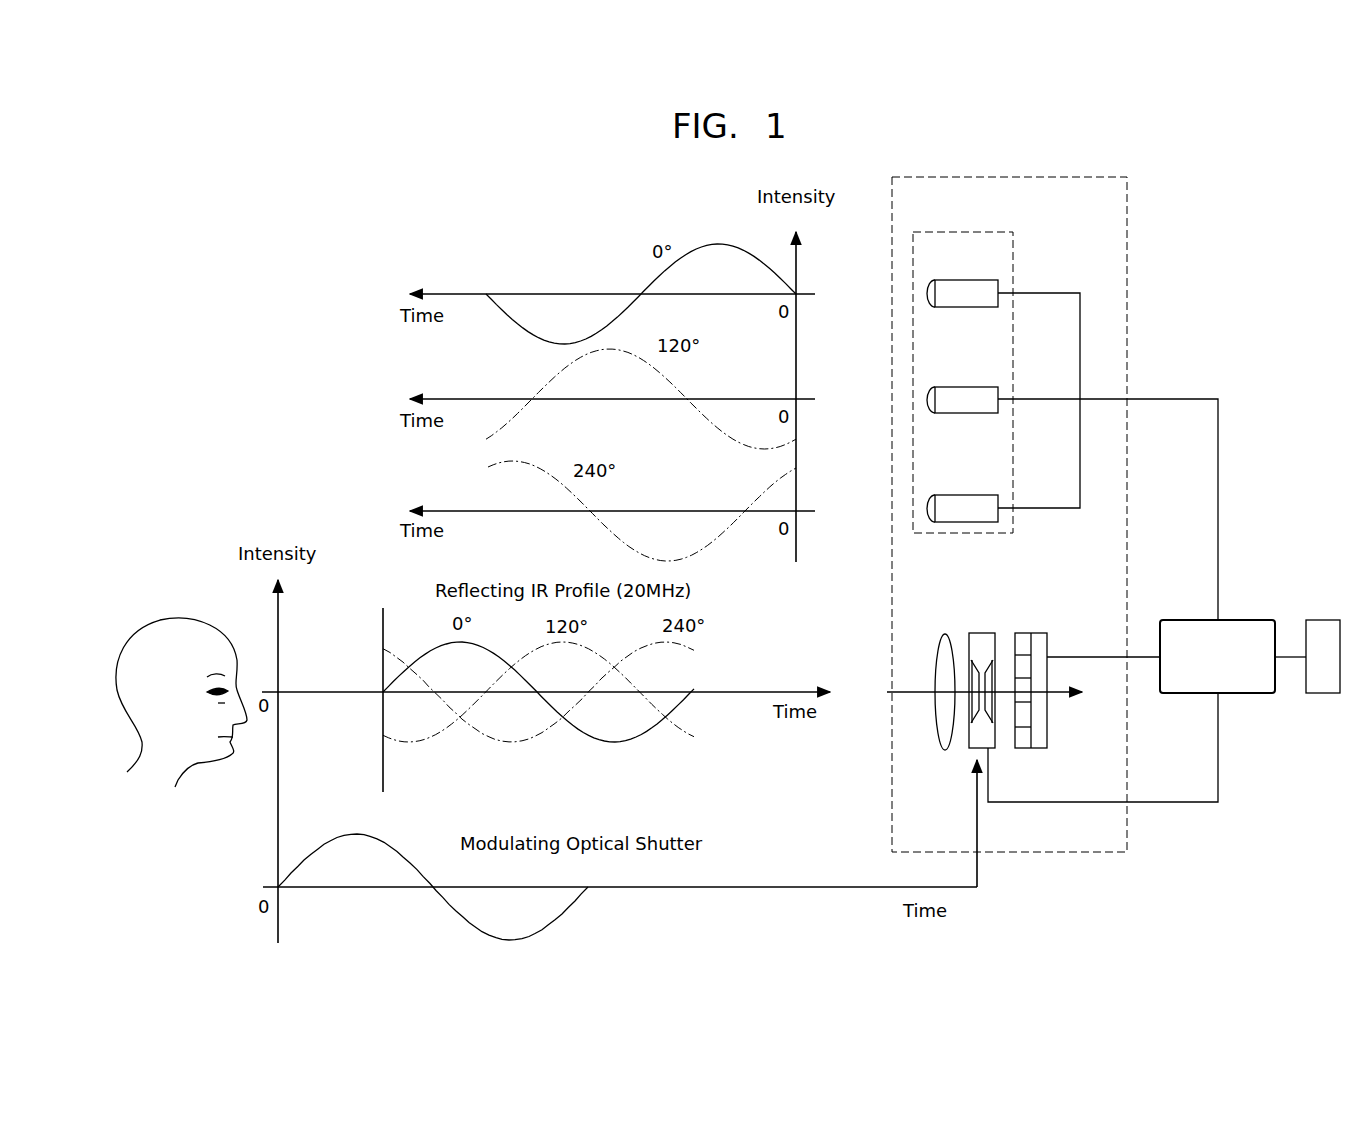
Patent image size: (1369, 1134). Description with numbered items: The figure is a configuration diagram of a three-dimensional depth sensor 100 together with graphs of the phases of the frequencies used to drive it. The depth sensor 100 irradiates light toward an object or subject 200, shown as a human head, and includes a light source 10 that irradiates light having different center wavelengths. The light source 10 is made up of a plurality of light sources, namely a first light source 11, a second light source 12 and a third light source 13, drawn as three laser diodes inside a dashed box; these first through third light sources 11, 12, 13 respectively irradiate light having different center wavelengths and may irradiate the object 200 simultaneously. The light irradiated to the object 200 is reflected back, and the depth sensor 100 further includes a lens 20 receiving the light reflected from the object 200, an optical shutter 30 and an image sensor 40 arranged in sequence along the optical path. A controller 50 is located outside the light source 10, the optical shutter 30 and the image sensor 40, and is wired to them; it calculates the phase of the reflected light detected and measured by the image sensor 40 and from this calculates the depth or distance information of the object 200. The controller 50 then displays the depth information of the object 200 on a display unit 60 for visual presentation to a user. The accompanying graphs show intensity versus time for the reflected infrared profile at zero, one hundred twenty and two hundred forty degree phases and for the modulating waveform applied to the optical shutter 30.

The 3D depth sensor 100 is at (1020, 176).
The light source 10 is at (963, 232).
The first light source 11 is at (963, 280).
The second light source 12 is at (963, 387).
The third light source 13 is at (963, 495).
The lens 20 is at (945, 635).
The optical shutter 30 is at (985, 616).
The image sensor 40 is at (1035, 616).
The controller 50 is at (1177, 620).
The display unit 60 is at (1325, 620).
The object 200 is at (151, 598).